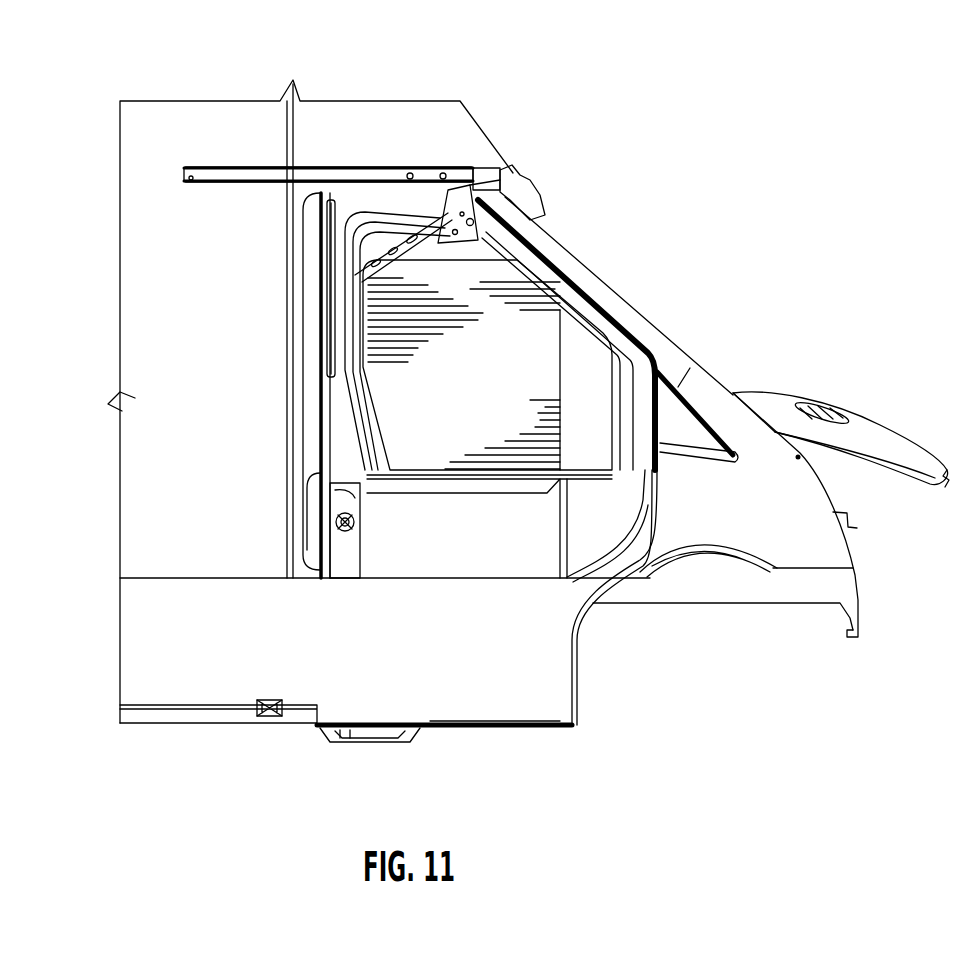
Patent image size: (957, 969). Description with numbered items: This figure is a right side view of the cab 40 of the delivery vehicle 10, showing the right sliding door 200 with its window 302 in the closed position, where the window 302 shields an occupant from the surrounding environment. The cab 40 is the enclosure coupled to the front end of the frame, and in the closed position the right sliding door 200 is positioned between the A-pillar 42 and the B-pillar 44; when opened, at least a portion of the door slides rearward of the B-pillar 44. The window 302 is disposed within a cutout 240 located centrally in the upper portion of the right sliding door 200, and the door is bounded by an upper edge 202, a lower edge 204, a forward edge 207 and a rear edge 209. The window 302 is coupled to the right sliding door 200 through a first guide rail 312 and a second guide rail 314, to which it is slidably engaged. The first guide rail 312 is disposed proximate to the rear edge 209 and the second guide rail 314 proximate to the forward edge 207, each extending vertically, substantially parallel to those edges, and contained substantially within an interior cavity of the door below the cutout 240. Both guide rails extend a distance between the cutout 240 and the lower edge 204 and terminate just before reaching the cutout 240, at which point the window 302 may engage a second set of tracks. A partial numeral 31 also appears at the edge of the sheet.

The delivery vehicle 10 is at (688, 152).
The cab 40 is at (697, 400).
The A-pillar 42 is at (575, 285).
The B-pillar 44 is at (305, 310).
The right sliding door 200 is at (585, 370).
The upper edge 202 is at (405, 190).
The lower edge 204 is at (513, 742).
The forward edge 207 is at (580, 680).
The rear edge 209 is at (320, 440).
The cutout 240 is at (372, 335).
The window 302 is at (518, 340).
The first guide rail 312 is at (353, 458).
The second guide rail 314 is at (583, 510).
The partial reference numeral 31 is at (943, 669).